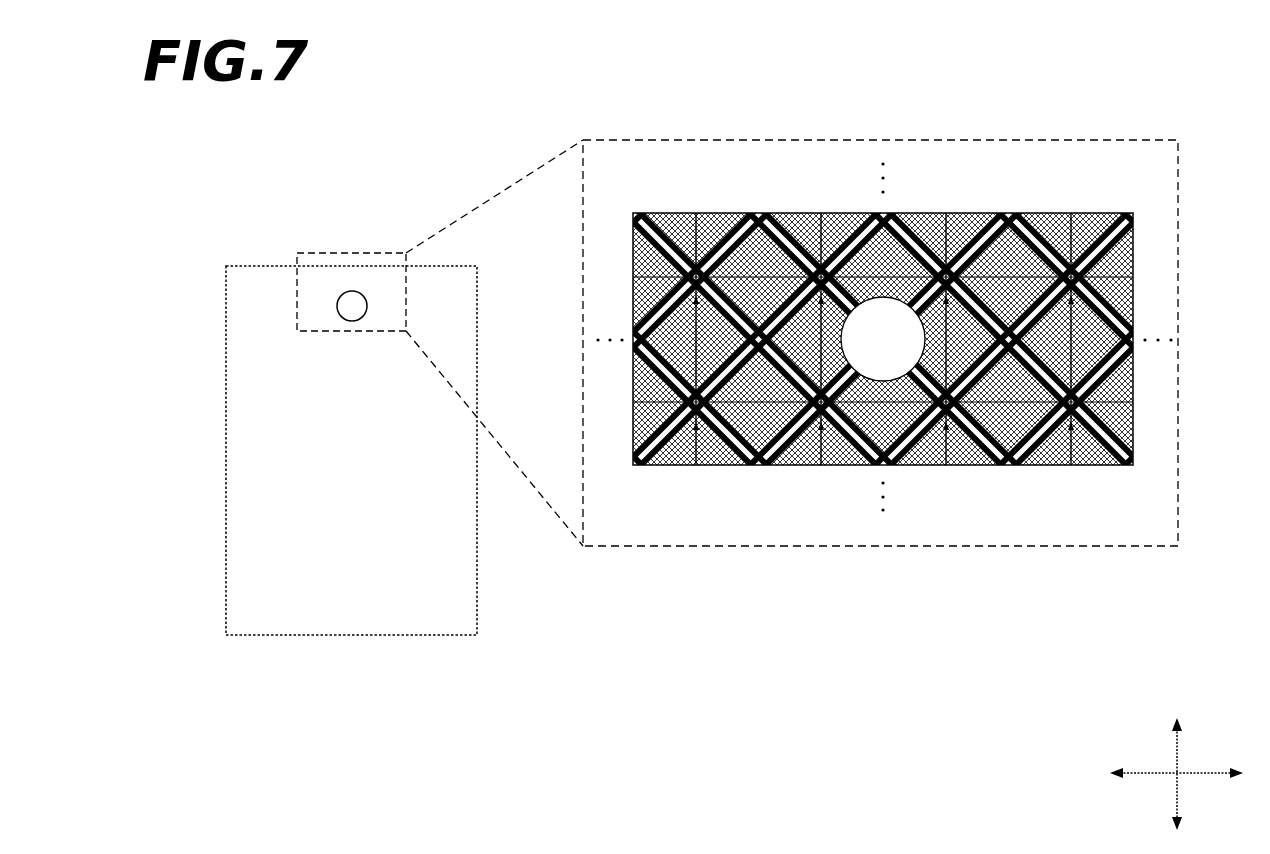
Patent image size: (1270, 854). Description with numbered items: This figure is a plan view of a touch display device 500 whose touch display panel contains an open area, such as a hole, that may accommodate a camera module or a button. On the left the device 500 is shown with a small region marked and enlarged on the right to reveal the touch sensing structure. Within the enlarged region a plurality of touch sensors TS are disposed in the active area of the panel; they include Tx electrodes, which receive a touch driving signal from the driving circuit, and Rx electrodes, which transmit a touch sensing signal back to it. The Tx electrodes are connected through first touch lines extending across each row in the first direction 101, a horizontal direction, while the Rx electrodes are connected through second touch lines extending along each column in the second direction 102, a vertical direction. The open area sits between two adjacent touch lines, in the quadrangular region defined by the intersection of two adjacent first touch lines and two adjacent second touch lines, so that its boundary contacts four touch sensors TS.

The touch display device 500 is at (238, 165).
The touch sensor TS is at (1057, 223).
The first direction 101 is at (1210, 770).
The second direction 102 is at (1175, 752).